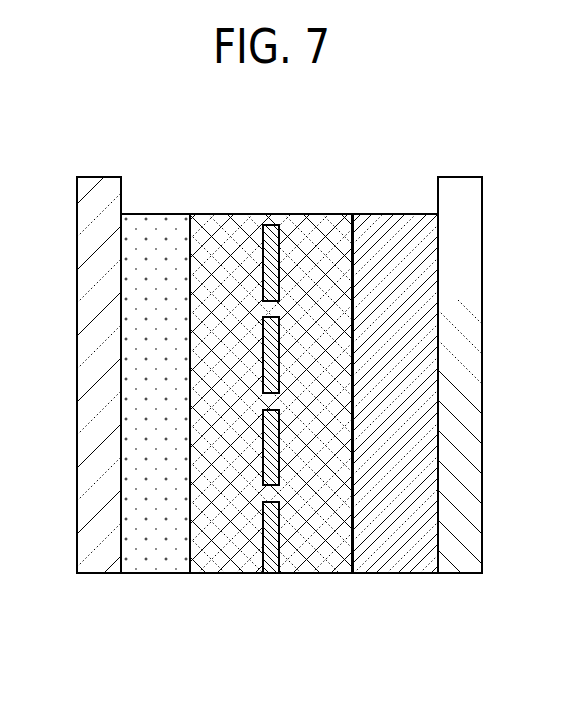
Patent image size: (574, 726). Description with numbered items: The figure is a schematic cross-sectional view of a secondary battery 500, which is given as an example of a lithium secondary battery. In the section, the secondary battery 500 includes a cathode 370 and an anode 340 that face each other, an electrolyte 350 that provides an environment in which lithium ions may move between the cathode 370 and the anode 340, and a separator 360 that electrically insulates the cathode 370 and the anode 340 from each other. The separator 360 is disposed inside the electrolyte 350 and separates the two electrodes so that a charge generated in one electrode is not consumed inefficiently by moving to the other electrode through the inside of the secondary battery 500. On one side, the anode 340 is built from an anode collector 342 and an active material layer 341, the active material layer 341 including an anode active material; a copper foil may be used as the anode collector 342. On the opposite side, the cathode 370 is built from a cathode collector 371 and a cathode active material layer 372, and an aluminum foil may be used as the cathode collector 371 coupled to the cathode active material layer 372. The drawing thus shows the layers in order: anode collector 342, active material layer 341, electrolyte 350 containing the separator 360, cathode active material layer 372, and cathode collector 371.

The secondary battery 500 is at (47, 130).
The anode 340 is at (133, 421).
The active material layer 341 is at (169, 573).
The anode collector 342 is at (105, 573).
The electrolyte 350 is at (215, 573).
The separator 360 is at (272, 573).
The cathode 370 is at (417, 421).
The cathode collector 371 is at (470, 573).
The cathode active material layer 372 is at (403, 573).